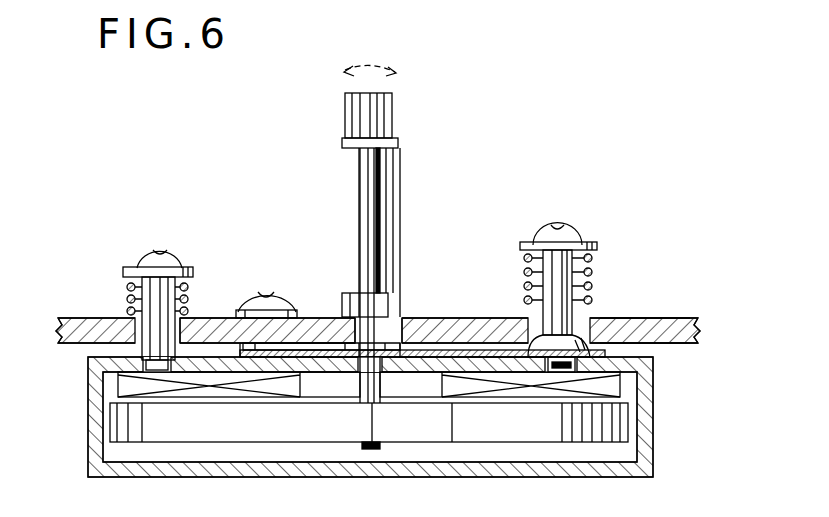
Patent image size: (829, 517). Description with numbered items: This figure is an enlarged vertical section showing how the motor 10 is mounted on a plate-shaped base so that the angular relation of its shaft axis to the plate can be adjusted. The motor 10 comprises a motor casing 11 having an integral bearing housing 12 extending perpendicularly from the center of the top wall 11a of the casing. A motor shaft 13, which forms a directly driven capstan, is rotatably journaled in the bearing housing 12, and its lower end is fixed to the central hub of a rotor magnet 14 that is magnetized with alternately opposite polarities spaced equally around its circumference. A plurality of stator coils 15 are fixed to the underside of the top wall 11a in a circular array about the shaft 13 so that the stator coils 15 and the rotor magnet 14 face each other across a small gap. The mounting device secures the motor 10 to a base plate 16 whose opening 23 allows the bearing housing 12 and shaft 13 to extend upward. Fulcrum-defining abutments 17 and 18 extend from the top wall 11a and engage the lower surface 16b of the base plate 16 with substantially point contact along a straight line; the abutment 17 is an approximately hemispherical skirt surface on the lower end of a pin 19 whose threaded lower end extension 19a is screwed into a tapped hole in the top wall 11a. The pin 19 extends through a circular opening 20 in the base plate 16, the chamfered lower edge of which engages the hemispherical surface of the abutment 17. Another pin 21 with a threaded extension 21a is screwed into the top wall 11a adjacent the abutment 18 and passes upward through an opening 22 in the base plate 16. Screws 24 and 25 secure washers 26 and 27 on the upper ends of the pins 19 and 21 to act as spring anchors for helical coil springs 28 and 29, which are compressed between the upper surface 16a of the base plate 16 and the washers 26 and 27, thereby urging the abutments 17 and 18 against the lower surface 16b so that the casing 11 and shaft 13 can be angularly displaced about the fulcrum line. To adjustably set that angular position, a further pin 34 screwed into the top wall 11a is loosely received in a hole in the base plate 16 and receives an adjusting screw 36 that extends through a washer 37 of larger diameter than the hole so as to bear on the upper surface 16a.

The motor 10 is at (604, 200).
The motor casing 11 is at (658, 430).
The top wall 11a is at (432, 335).
The bearing housing 12 is at (400, 158).
The motor shaft 13 is at (360, 185).
The rotor magnet 14 is at (249, 430).
The stator coils 15 is at (118, 385).
The base plate 16 is at (678, 314).
The upper surface of base plate 16a is at (648, 318).
The lower surface of base plate 16b is at (666, 345).
The abutment 17 is at (588, 330).
The abutment 18 is at (218, 322).
The pin 19 is at (563, 288).
The threaded lower end extension 19a is at (561, 372).
The circular opening 20 is at (524, 312).
The pin 21 is at (150, 300).
The threaded extension 21a is at (146, 363).
The opening 22 is at (128, 318).
The opening 23 is at (404, 325).
The screw 24 is at (558, 225).
The screw 25 is at (163, 250).
The washer 26 is at (597, 246).
The washer 27 is at (123, 272).
The helical coil spring 28 is at (523, 262).
The helical coil spring 29 is at (190, 284).
The pin 34 is at (270, 347).
The adjusting screw 36 is at (263, 292).
The washer 37 is at (297, 322).